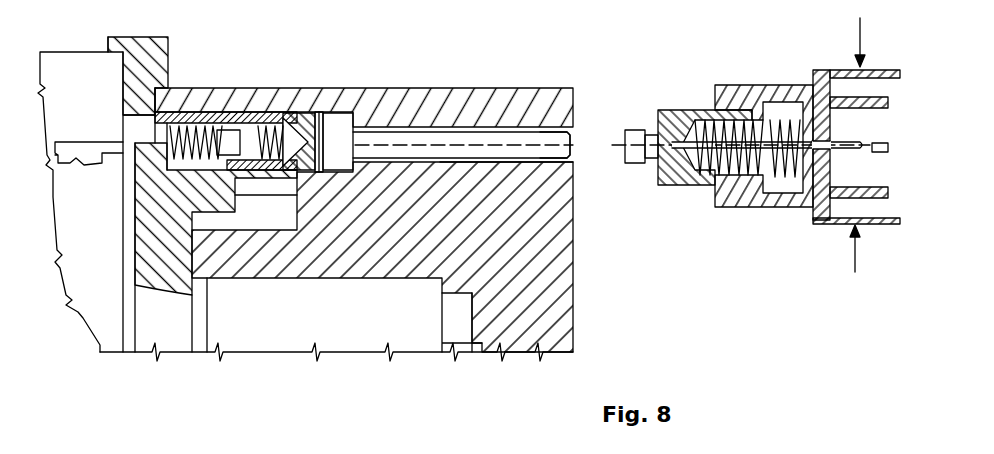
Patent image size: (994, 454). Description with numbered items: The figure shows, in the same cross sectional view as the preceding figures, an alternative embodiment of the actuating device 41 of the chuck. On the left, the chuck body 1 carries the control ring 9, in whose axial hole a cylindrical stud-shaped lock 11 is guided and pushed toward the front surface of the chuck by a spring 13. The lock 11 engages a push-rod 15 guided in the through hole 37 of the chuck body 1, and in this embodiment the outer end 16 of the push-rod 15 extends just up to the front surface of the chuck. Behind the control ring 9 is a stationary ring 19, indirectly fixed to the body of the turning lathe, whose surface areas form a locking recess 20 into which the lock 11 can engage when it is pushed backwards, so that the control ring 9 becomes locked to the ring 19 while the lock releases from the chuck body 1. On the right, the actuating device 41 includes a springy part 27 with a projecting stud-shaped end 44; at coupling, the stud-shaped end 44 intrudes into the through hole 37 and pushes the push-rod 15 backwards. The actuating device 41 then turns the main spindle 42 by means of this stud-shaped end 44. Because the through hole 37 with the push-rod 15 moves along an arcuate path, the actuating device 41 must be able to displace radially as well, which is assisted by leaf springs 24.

The chuck body 1 is at (385, 97).
The control ring 9 is at (213, 193).
The lock 11 is at (313, 127).
The spring 13 is at (280, 140).
The push-rod 15 is at (480, 138).
The outer end of the push-rod 16 is at (548, 137).
The ring 19 is at (152, 58).
The locking recess 20 is at (137, 123).
The leaf springs 24 is at (833, 70).
The springy part 27 is at (663, 186).
The through hole 37 is at (520, 163).
The actuating device 41 is at (902, 150).
The main spindle 42 is at (65, 192).
The stud-shaped end 44 is at (648, 133).